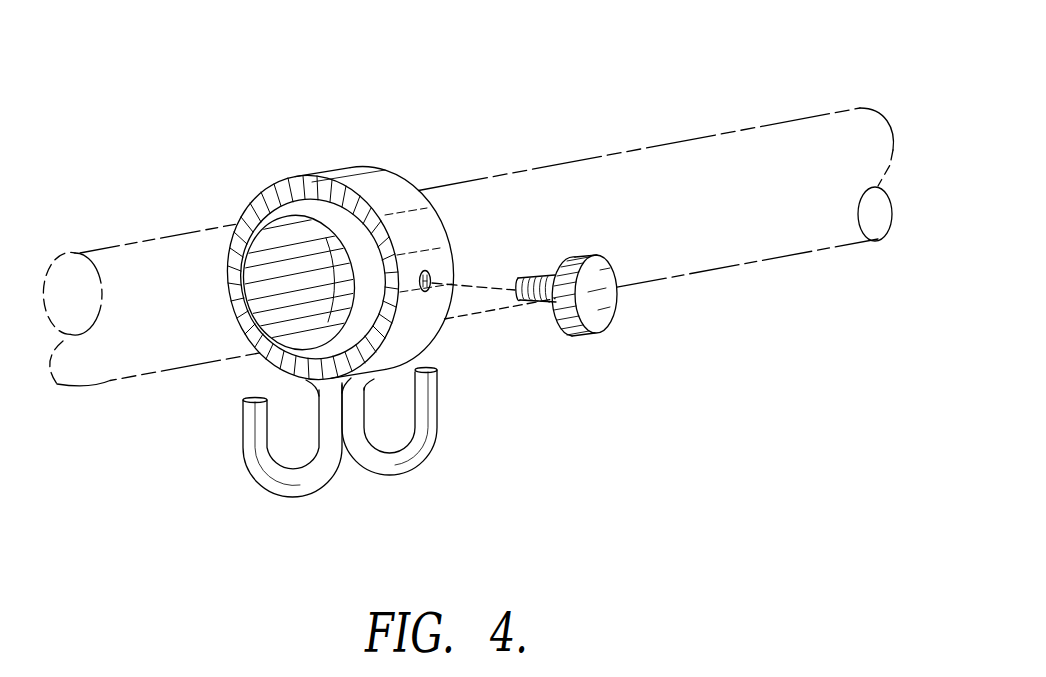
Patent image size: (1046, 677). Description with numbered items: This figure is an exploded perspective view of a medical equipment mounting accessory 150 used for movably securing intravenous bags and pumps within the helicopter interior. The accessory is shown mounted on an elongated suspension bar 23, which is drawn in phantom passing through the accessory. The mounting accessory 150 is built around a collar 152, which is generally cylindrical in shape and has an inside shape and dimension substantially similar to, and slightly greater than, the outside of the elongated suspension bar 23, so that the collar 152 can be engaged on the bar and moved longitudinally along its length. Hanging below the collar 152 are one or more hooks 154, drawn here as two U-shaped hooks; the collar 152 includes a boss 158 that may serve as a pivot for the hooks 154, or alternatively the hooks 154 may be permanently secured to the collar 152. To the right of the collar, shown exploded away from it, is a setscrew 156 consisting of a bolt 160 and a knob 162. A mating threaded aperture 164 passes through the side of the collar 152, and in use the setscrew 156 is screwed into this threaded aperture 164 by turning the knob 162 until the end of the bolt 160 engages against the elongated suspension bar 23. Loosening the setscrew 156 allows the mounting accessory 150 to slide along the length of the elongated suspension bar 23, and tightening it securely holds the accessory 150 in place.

The elongated suspension bar 23 is at (662, 280).
The medical equipment mounting accessory 150 is at (447, 288).
The collar 152 is at (441, 331).
The hooks 154 is at (399, 475).
The setscrew 156 is at (604, 299).
The boss 158 is at (302, 402).
The bolt 160 is at (551, 277).
The knob 162 is at (617, 279).
The threaded aperture 164 is at (433, 280).